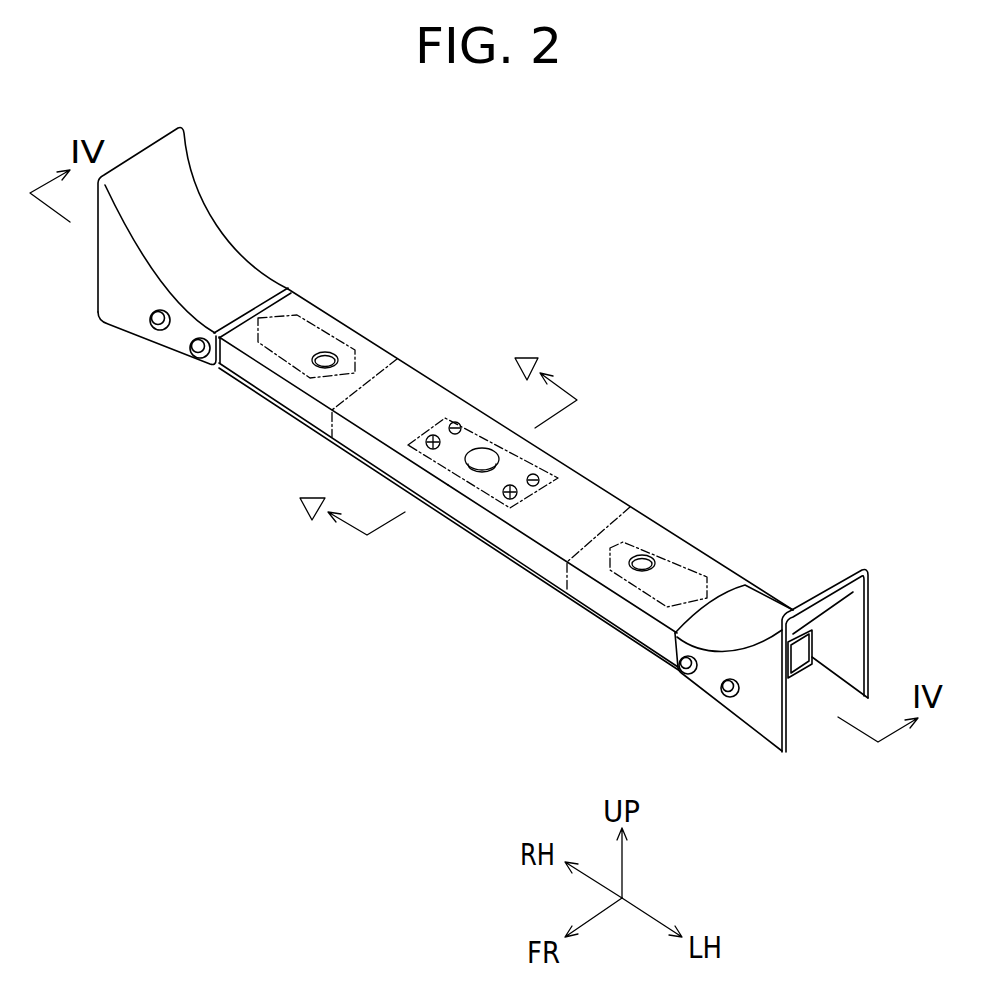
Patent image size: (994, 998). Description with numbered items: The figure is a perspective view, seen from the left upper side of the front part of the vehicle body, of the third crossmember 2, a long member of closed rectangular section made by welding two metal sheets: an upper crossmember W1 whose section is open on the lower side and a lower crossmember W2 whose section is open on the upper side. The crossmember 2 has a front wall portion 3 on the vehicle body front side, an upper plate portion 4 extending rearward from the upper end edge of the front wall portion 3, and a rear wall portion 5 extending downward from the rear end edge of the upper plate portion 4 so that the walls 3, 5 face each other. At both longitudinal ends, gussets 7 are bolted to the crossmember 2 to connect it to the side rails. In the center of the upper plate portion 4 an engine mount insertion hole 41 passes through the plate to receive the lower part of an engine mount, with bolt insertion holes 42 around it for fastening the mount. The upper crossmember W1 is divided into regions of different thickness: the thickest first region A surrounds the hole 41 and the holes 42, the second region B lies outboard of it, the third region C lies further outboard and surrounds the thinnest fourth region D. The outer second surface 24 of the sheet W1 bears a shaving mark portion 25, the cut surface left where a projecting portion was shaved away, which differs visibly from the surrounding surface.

The third crossmember 2 is at (441, 357).
The front wall portion 3 is at (487, 528).
The upper plate portion 4 is at (601, 507).
The rear wall portion 5 is at (715, 554).
The gusset 7 is at (205, 235).
The second surface 24 is at (552, 530).
The shaving mark portion 25 is at (375, 422).
The engine mount insertion hole 41 is at (470, 463).
The bolt insertion holes 42 is at (455, 428).
The first region A is at (485, 447).
The second region B is at (410, 390).
The third region C is at (278, 385).
The fourth region D is at (310, 337).
The upper crossmember W1 is at (575, 500).
The lower crossmember W2 is at (598, 613).